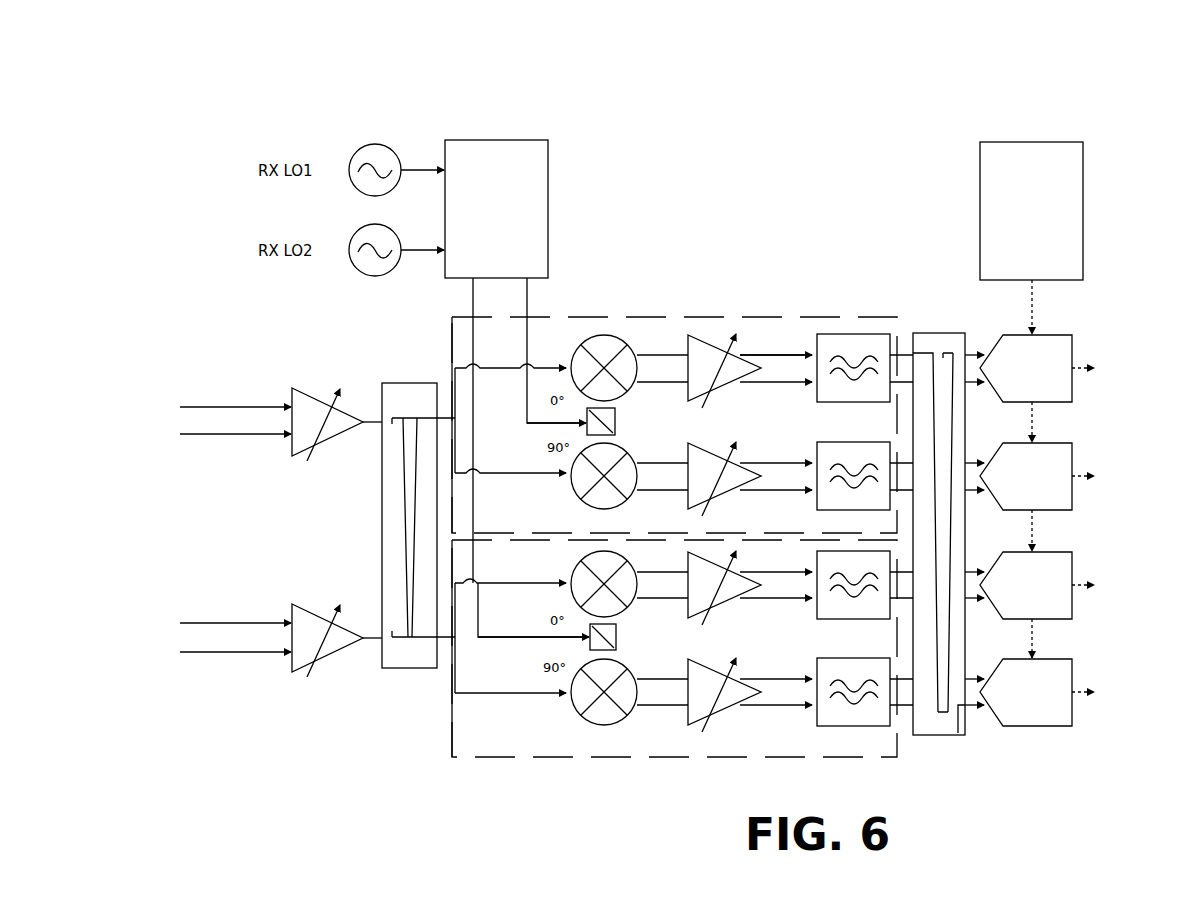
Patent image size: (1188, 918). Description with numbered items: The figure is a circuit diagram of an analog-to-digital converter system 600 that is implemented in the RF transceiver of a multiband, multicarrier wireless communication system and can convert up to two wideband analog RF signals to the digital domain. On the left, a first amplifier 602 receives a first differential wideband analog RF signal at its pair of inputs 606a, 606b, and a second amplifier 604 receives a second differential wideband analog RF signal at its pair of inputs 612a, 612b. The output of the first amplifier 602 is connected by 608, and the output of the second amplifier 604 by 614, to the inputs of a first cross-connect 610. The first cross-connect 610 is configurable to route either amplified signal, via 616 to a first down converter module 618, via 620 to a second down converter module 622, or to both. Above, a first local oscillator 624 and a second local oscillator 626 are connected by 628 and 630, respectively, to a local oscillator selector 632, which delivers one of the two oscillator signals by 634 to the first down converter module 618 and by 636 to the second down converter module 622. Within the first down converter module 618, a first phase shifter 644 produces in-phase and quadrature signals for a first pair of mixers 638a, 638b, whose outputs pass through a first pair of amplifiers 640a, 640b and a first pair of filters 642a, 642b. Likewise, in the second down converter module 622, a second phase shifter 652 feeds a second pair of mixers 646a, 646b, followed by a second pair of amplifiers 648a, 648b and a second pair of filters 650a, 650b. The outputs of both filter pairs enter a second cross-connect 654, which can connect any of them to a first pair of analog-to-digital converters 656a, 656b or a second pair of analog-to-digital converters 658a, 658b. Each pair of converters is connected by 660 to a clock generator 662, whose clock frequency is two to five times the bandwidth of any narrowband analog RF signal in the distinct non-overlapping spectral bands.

The analog-to-digital converter system 600 is at (324, 44).
The first amplifier 602 is at (315, 388).
The second amplifier 604 is at (315, 604).
The input of first amplifier 606a is at (225, 405).
The input of first amplifier 606b is at (222, 436).
The connection from first amplifier output to first cross-connect 608 is at (372, 417).
The first cross-connect 610 is at (411, 670).
The input of second amplifier 612a is at (225, 621).
The input of second amplifier 612b is at (222, 655).
The connection from second amplifier output to first cross-connect 614 is at (369, 641).
The connection from first cross-connect to first down converter module 616 is at (443, 412).
The first down converter module 618 is at (724, 316).
The connection from first cross-connect to second down converter module 620 is at (446, 636).
The second down converter module 622 is at (705, 757).
The first local oscillator 624 is at (375, 144).
The second local oscillator 626 is at (377, 276).
The connection from first local oscillator to local oscillator selector 628 is at (420, 168).
The connection from second local oscillator to local oscillator selector 630 is at (420, 248).
The local oscillator selector 632 is at (505, 140).
The connection from local oscillator selector to first down converter module 634 is at (527, 425).
The connection from local oscillator selector to second down converter module 636 is at (478, 628).
The first mixer of first pair of mixers 638a is at (605, 335).
The second mixer of first pair of mixers 638b is at (580, 497).
The first amplifier of first pair of amplifiers 640a is at (697, 336).
The second amplifier of first pair of amplifiers 640b is at (690, 506).
The first filter of first pair of filters 642a is at (811, 403).
The second filter of first pair of filters 642b is at (812, 509).
The first phase shifter 644 is at (615, 423).
The first mixer of second pair of mixers 646a is at (574, 573).
The second mixer of second pair of mixers 646b is at (583, 714).
The first amplifier of second pair of amplifiers 648a is at (718, 613).
The second amplifier of second pair of amplifiers 648b is at (693, 723).
The first filter of second pair of filters 650a is at (814, 620).
The second filter of second pair of filters 650b is at (811, 726).
The second phase shifter 652 is at (616, 637).
The second cross-connect 654 is at (945, 330).
The first analog-to-digital converter of first pair 656a is at (1075, 344).
The second analog-to-digital converter of first pair 656b is at (1075, 452).
The first analog-to-digital converter of second pair 658a is at (1075, 561).
The second analog-to-digital converter of second pair 658b is at (1075, 668).
The clock connection 660 is at (1022, 293).
The clock generator 662 is at (1038, 140).